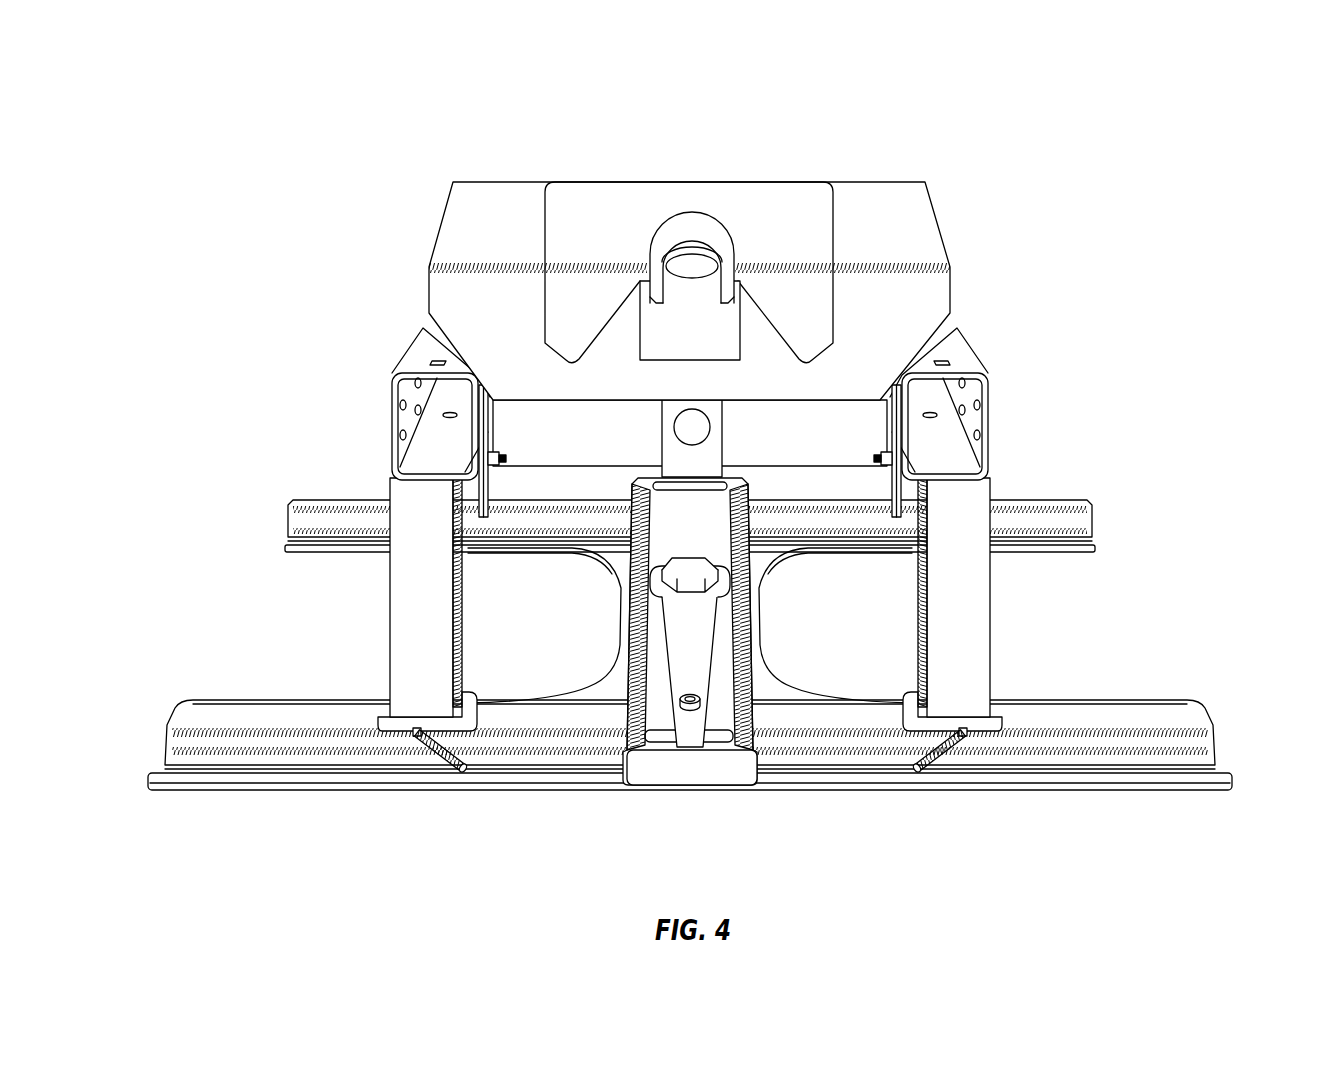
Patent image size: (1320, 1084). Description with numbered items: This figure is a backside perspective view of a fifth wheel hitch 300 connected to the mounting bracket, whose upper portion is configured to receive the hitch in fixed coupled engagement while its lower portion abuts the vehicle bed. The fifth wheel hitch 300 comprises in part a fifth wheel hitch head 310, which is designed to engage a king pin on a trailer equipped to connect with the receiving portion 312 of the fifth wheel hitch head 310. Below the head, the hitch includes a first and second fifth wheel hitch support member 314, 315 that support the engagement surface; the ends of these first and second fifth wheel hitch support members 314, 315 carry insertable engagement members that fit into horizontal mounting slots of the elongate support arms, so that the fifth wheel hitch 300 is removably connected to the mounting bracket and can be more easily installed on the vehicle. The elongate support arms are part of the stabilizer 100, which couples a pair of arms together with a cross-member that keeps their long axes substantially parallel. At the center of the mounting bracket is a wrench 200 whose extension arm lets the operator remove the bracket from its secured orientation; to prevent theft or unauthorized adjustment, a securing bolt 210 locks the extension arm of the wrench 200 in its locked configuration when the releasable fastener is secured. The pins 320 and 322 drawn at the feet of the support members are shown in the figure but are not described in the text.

The stabilizer 100 is at (1192, 610).
The wrench 200 is at (728, 653).
The securing bolt 210 is at (688, 722).
The fifth wheel hitch 300 is at (664, 296).
The fifth wheel hitch head 310 is at (645, 263).
The receiving portion 312 is at (692, 235).
The first fifth wheel hitch support member 314 is at (995, 643).
The second fifth wheel hitch support member 315 is at (385, 643).
The left locking pin 320 is at (423, 762).
The right locking pin 322 is at (956, 760).